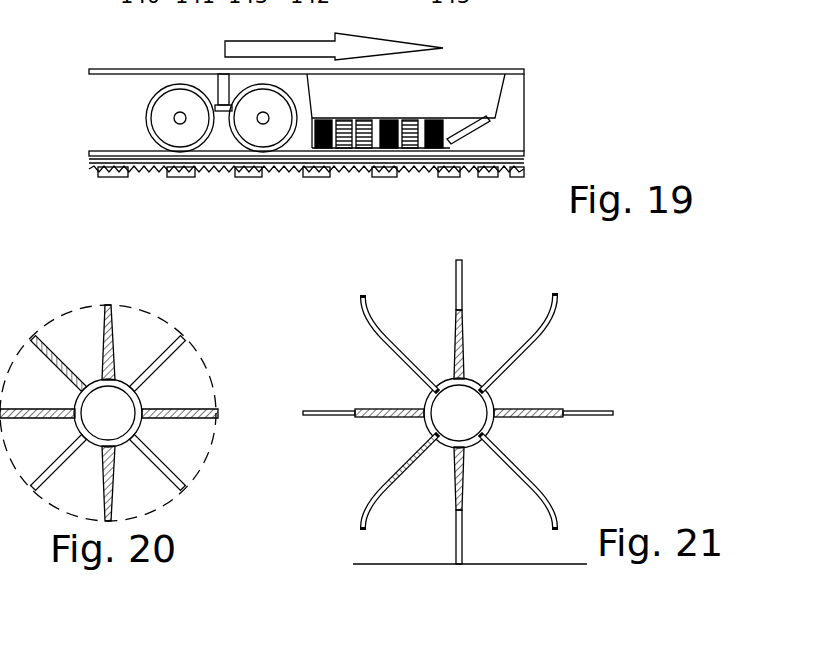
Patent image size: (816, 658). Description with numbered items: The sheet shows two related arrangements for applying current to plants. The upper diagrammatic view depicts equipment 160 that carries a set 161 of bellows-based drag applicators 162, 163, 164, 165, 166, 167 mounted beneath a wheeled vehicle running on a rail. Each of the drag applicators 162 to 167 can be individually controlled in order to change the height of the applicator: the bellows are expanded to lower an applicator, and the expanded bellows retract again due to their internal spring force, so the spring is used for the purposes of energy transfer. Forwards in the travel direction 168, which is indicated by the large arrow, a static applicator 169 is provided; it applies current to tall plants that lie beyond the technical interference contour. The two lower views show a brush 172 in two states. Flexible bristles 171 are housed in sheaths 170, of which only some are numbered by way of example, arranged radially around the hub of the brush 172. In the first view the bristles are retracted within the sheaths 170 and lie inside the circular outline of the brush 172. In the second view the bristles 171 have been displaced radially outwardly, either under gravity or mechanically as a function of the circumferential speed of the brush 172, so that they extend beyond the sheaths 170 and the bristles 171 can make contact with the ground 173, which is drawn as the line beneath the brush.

In FIG. 19, the equipment 160 is at (478, 66).
In FIG. 19, the set of drag applicators 161 is at (378, 117).
In FIG. 19, the drag applicator 162 is at (313, 150).
In FIG. 19, the drag applicator 163 is at (343, 143).
In FIG. 19, the drag applicator 164 is at (363, 142).
In FIG. 19, the drag applicator 165 is at (398, 143).
In FIG. 19, the drag applicator 166 is at (420, 143).
In FIG. 19, the drag applicator 167 is at (452, 175).
In FIG. 19, the travel direction 168 is at (232, 48).
In FIG. 19, the static applicator 169 is at (477, 127).
In FIG. 20, the sheath 170 is at (160, 372).
In FIG. 21, the sheath 170 is at (402, 363).
In FIG. 21, the flexible bristle 171 is at (378, 324).
In FIG. 21, the brush 172 is at (520, 382).
In FIG. 21, the ground 173 is at (433, 563).